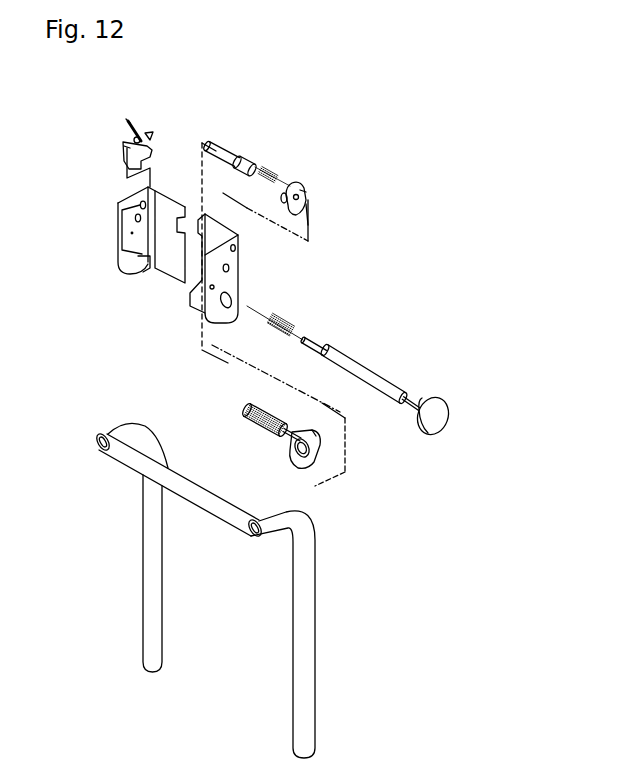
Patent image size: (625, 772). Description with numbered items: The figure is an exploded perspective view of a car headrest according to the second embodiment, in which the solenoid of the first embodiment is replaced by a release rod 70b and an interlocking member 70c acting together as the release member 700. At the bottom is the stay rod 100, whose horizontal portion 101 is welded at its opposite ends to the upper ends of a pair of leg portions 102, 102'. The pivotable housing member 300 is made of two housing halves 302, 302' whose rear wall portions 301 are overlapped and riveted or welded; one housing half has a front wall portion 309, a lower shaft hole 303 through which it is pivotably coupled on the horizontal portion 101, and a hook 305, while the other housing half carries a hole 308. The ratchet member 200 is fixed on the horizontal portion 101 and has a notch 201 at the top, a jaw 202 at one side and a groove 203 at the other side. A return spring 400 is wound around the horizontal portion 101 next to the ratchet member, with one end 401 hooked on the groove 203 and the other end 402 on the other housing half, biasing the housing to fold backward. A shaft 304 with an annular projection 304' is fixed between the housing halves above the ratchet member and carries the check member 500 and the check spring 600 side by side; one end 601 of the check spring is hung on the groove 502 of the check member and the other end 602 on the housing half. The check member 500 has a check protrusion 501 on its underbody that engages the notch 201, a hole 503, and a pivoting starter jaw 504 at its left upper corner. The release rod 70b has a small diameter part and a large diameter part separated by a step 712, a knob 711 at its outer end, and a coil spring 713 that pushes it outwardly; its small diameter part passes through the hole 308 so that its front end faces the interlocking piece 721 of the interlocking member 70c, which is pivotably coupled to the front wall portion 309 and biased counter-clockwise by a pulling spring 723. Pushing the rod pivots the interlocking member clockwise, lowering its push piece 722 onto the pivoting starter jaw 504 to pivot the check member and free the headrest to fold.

The stay rod 100 is at (231, 590).
The horizontal portion 101 is at (220, 520).
The leg portion 102 is at (114, 547).
The leg portion 102' is at (325, 634).
The ratchet member 200 is at (317, 454).
The notch 201 is at (320, 432).
The jaw 202 is at (322, 452).
The groove 203 is at (298, 458).
The pivotable housing member 300 is at (135, 258).
The rear wall portion 301 is at (160, 270).
The housing half 302 is at (110, 228).
The housing half 302' is at (248, 268).
The lower shaft hole 303 is at (232, 302).
The shaft 304 is at (219, 118).
The annular projection 304' is at (247, 129).
The bracket hook 305 is at (146, 268).
The hole 308 is at (216, 288).
The front wall portion 309 is at (127, 245).
The return spring 400 is at (239, 434).
The one end of return spring 401 is at (280, 438).
The other end of return spring 402 is at (250, 372).
The check member 500 is at (323, 203).
The check protrusion 501 is at (316, 226).
The groove 502 is at (304, 193).
The locking plate hole 503 is at (298, 200).
The pivoting starter jaw 504 is at (284, 212).
The check spring 600 is at (280, 175).
The one end of check spring 601 is at (310, 185).
The other end of check spring 602 is at (268, 166).
The release member 700 is at (397, 382).
The release rod 70b is at (395, 390).
The interlocking member 70c is at (127, 142).
The knob 711 is at (437, 422).
The step 712 is at (318, 348).
The coil spring 713 is at (285, 326).
The interlocking piece 721 is at (150, 158).
The push piece 722 is at (152, 142).
The pulling spring 723 is at (135, 128).